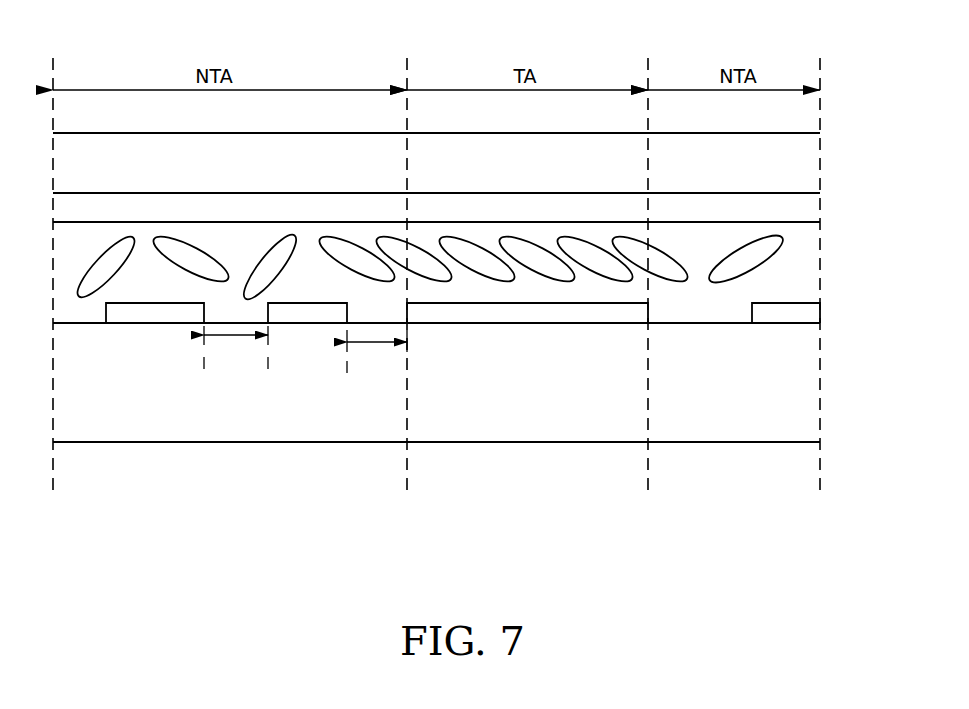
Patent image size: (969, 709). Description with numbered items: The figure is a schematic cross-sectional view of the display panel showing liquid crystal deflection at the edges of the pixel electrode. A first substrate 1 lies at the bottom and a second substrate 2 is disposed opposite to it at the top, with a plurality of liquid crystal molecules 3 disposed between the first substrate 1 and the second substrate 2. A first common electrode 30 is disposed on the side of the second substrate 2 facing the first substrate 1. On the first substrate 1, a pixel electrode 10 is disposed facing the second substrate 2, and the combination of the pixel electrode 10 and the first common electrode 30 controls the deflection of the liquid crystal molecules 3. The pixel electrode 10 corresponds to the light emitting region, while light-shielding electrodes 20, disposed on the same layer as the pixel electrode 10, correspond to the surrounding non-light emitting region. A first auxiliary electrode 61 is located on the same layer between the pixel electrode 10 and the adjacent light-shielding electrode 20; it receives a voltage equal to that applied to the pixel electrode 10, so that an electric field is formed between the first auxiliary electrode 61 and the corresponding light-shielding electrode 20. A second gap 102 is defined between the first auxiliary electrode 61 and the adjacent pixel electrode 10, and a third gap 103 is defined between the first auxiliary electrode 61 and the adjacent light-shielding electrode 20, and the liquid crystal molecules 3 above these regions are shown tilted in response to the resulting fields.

The first substrate 1 is at (788, 388).
The second substrate 2 is at (773, 160).
The liquid crystal molecules 3 is at (743, 263).
The pixel electrode 10 is at (445, 310).
The light-shielding electrode 20 is at (140, 310).
The first common electrode 30 is at (773, 207).
The first auxiliary electrode 61 is at (288, 310).
The second gap 102 is at (377, 353).
The third gap 103 is at (236, 349).